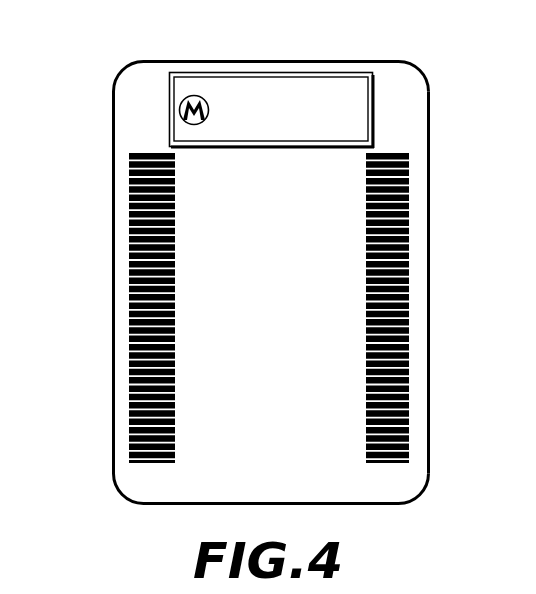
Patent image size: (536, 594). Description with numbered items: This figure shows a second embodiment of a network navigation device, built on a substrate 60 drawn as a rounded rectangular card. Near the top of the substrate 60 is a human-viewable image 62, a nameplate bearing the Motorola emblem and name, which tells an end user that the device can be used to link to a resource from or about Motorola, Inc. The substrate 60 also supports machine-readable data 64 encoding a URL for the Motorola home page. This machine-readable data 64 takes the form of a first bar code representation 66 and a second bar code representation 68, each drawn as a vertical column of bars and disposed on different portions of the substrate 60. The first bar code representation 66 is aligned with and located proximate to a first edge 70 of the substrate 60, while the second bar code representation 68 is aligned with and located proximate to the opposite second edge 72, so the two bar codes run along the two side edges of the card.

The substrate 60 is at (208, 61).
The human-viewable image 62 is at (313, 148).
The machine-readable data 64 is at (271, 308).
The first bar code representation 66 is at (130, 232).
The second bar code representation 68 is at (408, 222).
The first edge 70 is at (115, 297).
The second edge 72 is at (428, 292).